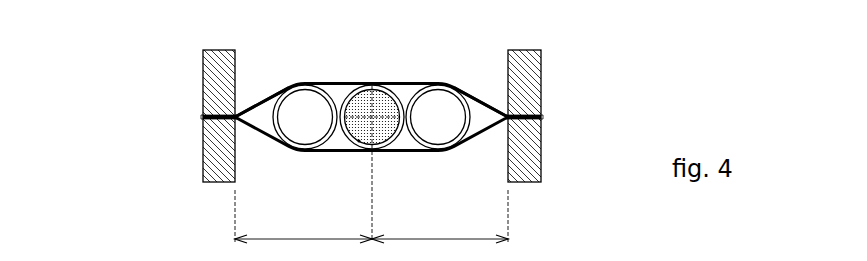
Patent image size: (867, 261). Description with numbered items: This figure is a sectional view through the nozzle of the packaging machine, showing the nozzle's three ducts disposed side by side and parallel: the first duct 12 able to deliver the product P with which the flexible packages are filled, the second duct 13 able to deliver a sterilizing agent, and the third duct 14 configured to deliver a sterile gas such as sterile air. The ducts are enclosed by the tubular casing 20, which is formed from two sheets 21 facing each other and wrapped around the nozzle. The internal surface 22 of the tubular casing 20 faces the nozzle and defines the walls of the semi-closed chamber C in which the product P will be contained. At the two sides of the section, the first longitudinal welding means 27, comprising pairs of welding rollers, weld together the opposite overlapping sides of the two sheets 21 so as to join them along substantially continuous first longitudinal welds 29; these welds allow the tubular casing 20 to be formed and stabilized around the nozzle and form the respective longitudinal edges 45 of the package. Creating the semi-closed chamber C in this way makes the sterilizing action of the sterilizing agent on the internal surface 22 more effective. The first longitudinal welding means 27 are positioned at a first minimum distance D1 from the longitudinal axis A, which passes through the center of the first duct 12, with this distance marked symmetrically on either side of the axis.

The first longitudinal welding means 27 is at (218, 46).
The tubular casing 20 is at (269, 89).
The second duct 13 is at (301, 85).
The sheet 21 is at (338, 81).
The first duct 12 is at (368, 86).
The longitudinal axis A is at (373, 116).
The third duct 14 is at (432, 86).
The semi-closed chamber C is at (478, 110).
The first longitudinal welds 29 is at (216, 114).
The longitudinal edges 45 is at (203, 118).
The product P is at (359, 141).
The internal surface 22 is at (399, 150).
The first minimum distance D1 is at (371, 216).